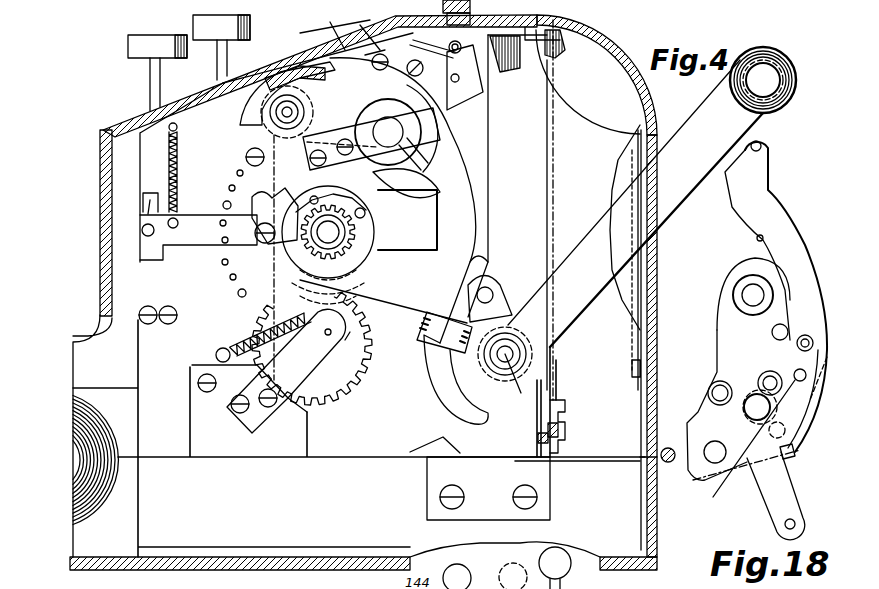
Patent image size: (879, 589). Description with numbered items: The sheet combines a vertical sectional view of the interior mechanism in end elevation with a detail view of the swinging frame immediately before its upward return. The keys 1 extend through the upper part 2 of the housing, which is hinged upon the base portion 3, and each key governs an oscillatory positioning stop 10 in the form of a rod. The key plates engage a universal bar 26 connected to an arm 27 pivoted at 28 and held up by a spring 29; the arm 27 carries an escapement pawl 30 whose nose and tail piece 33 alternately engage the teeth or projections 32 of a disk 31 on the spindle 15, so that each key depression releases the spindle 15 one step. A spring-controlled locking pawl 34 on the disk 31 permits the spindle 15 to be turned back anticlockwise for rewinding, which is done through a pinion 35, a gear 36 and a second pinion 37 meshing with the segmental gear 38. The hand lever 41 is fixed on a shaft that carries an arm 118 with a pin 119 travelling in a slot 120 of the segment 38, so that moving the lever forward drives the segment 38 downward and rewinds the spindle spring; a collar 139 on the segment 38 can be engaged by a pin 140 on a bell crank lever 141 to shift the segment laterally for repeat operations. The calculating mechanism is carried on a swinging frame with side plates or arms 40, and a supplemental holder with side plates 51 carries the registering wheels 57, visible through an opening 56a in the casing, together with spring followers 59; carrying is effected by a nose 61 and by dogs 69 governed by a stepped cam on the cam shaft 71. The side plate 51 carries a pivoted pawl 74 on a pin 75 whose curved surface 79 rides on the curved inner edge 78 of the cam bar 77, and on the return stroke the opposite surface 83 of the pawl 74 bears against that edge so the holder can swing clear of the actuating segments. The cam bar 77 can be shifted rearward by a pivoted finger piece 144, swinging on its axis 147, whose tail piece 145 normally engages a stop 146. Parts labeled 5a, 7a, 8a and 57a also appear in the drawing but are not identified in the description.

In FIG. 4, the keys 1 is at (158, 44).
In FIG. 4, the upper part of the casing 2 is at (648, 45).
In FIG. 4, the base portion 3 is at (656, 515).
In FIG. 4, the top wall 5a is at (542, 21).
In FIG. 4, the mounting plate 7a is at (269, 224).
In FIG. 4, the bottom bracket 8a is at (559, 518).
In FIG. 4, the positioning stop 10 is at (222, 270).
In FIG. 4, the spindle 15 is at (420, 245).
In FIG. 4, the universal bar 26 is at (150, 210).
In FIG. 4, the arm 27 is at (203, 245).
In FIG. 4, the pivot 28 is at (262, 243).
In FIG. 4, the spring 29 is at (178, 168).
In FIG. 4, the escapement pawl 30 is at (280, 192).
In FIG. 4, the disk 31 is at (352, 234).
In FIG. 4, the teeth or projections 32 is at (371, 147).
In FIG. 4, the tail piece 33 is at (262, 290).
In FIG. 4, the locking pawl 34 is at (350, 206).
In FIG. 4, the pinion 35 is at (350, 245).
In FIG. 4, the gear 36 is at (328, 405).
In FIG. 4, the second pinion 37 is at (340, 355).
In FIG. 4, the segmental gear 38 is at (434, 379).
In FIG. 4, the side plates or arms 40 is at (430, 182).
In FIG. 4, the hand lever 41 is at (531, 203).
In FIG. 4, the side plates 51 is at (367, 58).
In FIG. 18, the side plates 51 is at (750, 377).
In FIG. 4, the opening 56a is at (353, 298).
In FIG. 4, the registering wheels 57 is at (330, 22).
In FIG. 4, the cam disc 57a is at (405, 118).
In FIG. 4, the spring followers 59 is at (510, 350).
In FIG. 4, the nose 61 is at (300, 33).
In FIG. 4, the dogs 69 is at (295, 93).
In FIG. 4, the cam shaft 71 is at (300, 113).
In FIG. 18, the pivoted pawl 74 is at (806, 412).
In FIG. 18, the pin 75 is at (752, 402).
In FIG. 4, the cam bar 77 is at (492, 160).
In FIG. 18, the cam bar 77 is at (812, 272).
In FIG. 4, the curved inner edge 78 is at (490, 200).
In FIG. 18, the curved inner edge 78 is at (762, 240).
In FIG. 18, the curved surface 79 is at (783, 452).
In FIG. 18, the opposite surface 83 is at (754, 496).
In FIG. 4, the arm 118 is at (512, 314).
In FIG. 4, the pin 119 is at (490, 296).
In FIG. 4, the slot 120 is at (440, 400).
In FIG. 4, the collar 139 is at (500, 378).
In FIG. 4, the pin 140 is at (555, 373).
In FIG. 4, the bell crank lever 141 is at (550, 392).
In FIG. 4, the pivoted finger piece 144 is at (505, 58).
In FIG. 4, the tail piece 145 is at (483, 92).
In FIG. 4, the stop 146 is at (552, 42).
In FIG. 4, the axis 147 is at (446, 40).